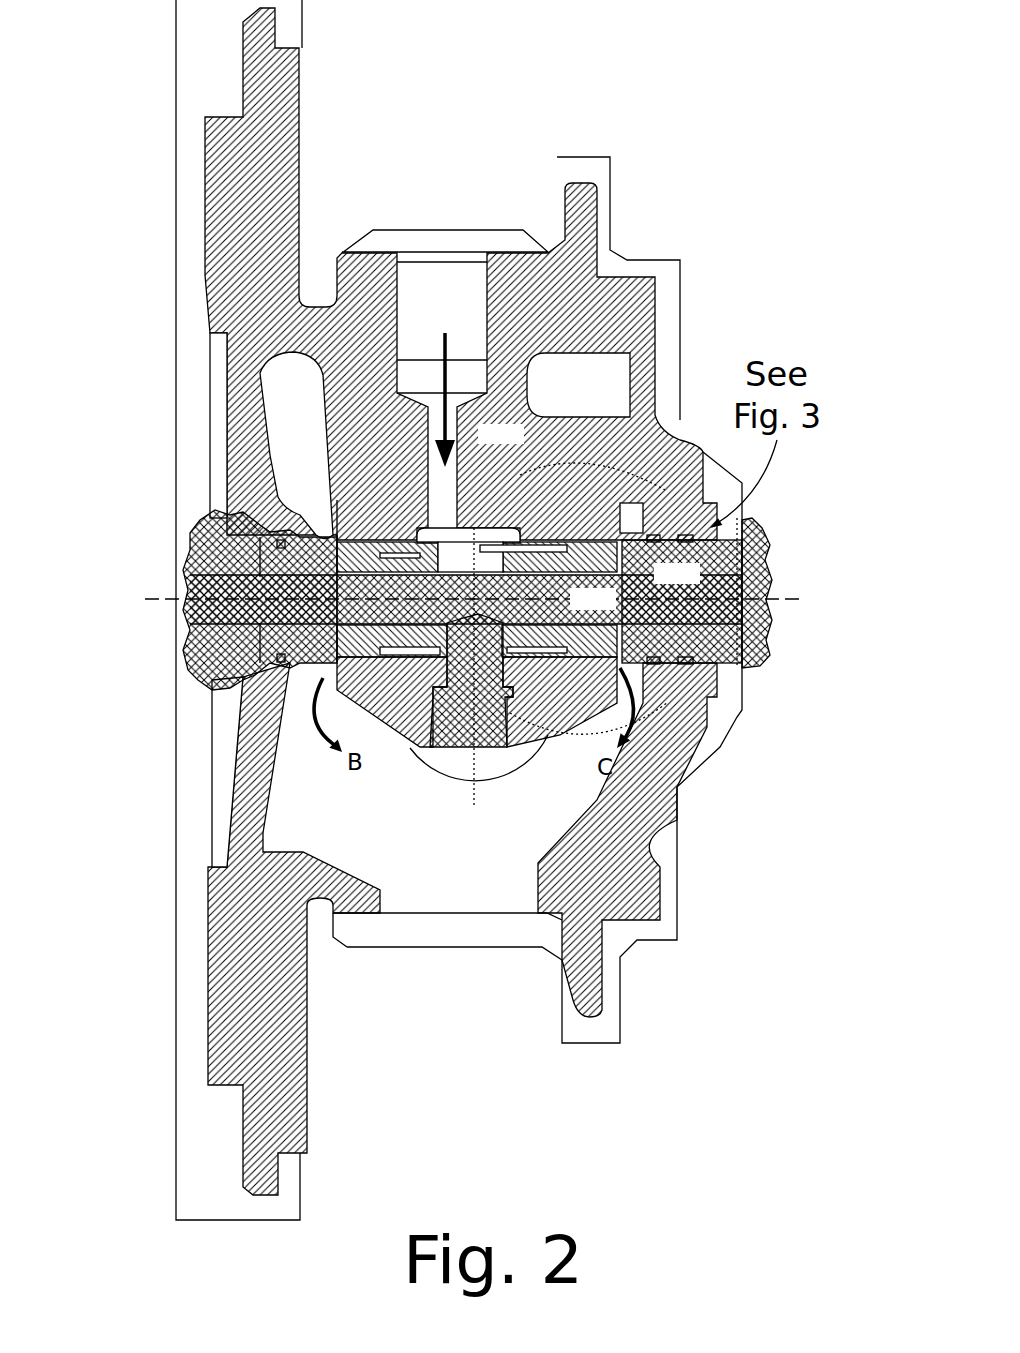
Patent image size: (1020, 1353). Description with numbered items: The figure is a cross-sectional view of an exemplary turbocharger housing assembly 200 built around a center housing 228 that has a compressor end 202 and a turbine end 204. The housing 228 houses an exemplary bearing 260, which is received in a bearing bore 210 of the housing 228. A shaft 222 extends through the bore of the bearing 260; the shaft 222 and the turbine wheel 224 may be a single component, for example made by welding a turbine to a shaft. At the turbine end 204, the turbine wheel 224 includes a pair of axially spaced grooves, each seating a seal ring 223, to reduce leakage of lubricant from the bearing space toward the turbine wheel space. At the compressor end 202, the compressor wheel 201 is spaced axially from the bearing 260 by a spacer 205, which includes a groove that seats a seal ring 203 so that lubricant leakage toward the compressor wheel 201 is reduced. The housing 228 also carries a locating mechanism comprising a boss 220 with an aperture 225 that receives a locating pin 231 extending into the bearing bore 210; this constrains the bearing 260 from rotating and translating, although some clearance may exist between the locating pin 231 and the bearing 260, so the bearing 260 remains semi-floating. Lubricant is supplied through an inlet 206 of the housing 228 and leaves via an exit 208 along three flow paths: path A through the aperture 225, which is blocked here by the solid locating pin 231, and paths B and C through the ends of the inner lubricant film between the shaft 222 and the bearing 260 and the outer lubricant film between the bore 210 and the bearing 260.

The housing assembly 200 is at (470, 126).
The compressor wheel 201 is at (210, 557).
The compressor end 202 is at (148, 496).
The seal ring 203 is at (280, 668).
The turbine end 204 is at (779, 548).
The spacer 205 is at (267, 637).
The inlet 206 is at (427, 236).
The exit 208 is at (448, 980).
The bearing bore 210 is at (540, 657).
The boss 220 is at (413, 748).
The shaft 222 is at (613, 610).
The seal ring 223 is at (677, 664).
The turbine wheel 224 is at (753, 627).
The aperture 225 is at (495, 762).
The housing 228 is at (522, 444).
The locating pin 231 is at (452, 750).
The bearing 260 is at (617, 557).